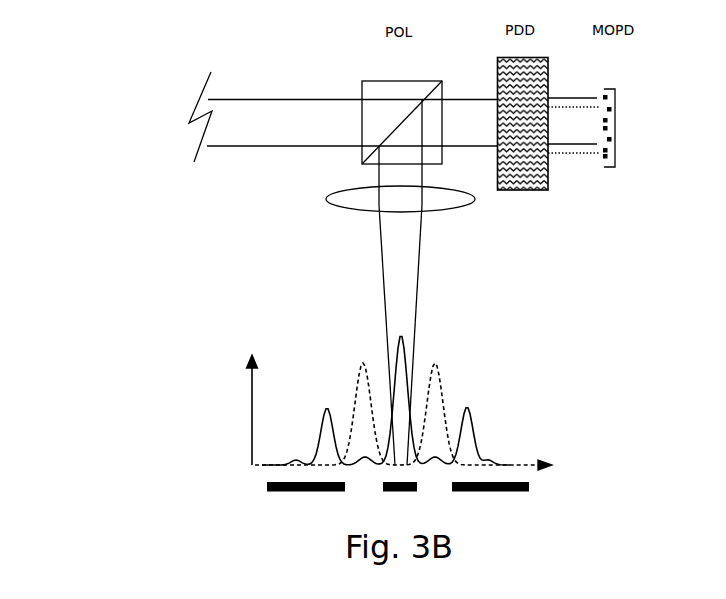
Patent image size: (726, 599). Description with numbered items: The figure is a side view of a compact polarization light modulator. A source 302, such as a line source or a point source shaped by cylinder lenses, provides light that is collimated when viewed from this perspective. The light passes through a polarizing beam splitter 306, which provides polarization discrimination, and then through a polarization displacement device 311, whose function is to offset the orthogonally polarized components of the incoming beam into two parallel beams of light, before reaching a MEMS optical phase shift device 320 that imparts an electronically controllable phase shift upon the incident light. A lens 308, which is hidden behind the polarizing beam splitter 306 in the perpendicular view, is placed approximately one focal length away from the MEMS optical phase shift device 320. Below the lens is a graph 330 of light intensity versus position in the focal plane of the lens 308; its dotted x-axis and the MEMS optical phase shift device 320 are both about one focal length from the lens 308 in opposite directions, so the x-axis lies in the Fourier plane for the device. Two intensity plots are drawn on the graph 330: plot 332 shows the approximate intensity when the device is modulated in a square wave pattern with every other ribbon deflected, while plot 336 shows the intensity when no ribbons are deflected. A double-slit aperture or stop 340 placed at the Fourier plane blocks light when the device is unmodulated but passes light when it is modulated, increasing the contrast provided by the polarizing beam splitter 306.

The source 302 is at (132, 142).
The polarizing beam splitter 306 is at (355, 77).
The lens 308 is at (340, 213).
The polarization displacement device 311 is at (538, 202).
The MEMS optical phase shift device 320 is at (632, 135).
The graph 330 is at (247, 438).
The intensity plot 332 is at (449, 382).
The intensity plot 336 is at (482, 430).
The double-slit aperture or stop 340 is at (290, 492).